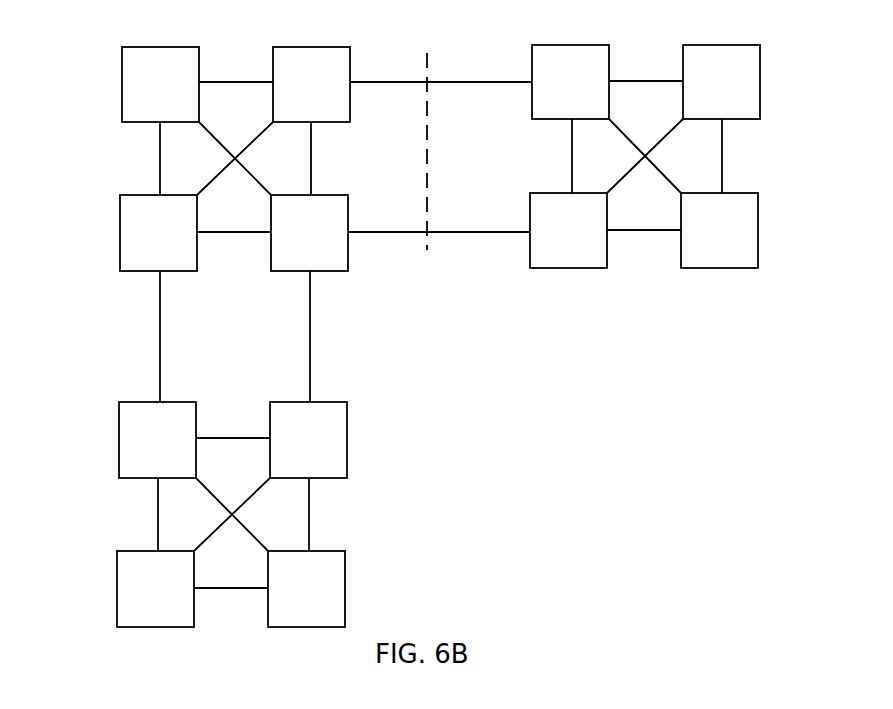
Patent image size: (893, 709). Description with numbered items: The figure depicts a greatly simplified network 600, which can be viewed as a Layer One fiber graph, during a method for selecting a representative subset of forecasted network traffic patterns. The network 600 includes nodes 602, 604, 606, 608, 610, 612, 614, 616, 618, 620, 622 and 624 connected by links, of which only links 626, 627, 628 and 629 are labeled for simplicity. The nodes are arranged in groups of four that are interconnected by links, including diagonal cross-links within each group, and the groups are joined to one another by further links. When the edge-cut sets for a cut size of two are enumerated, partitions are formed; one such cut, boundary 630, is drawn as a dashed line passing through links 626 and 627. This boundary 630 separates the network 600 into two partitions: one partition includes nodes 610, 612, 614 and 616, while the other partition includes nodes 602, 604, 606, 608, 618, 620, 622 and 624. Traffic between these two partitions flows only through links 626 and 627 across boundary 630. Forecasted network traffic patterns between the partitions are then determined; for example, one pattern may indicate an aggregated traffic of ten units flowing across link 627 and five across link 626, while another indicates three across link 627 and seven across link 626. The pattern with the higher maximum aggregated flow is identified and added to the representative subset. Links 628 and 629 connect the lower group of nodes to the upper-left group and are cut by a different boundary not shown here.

The network 600 is at (90, 52).
The node 602 is at (160, 84).
The node 604 is at (311, 84).
The node 606 is at (158, 233).
The node 608 is at (309, 233).
The node 610 is at (570, 82).
The node 612 is at (721, 82).
The node 614 is at (568, 230).
The node 616 is at (719, 230).
The node 618 is at (157, 440).
The node 620 is at (308, 440).
The node 622 is at (155, 589).
The node 624 is at (306, 589).
The link 626 is at (494, 232).
The link 627 is at (448, 82).
The link 628 is at (308, 300).
The link 629 is at (158, 317).
The boundary 630 is at (427, 250).